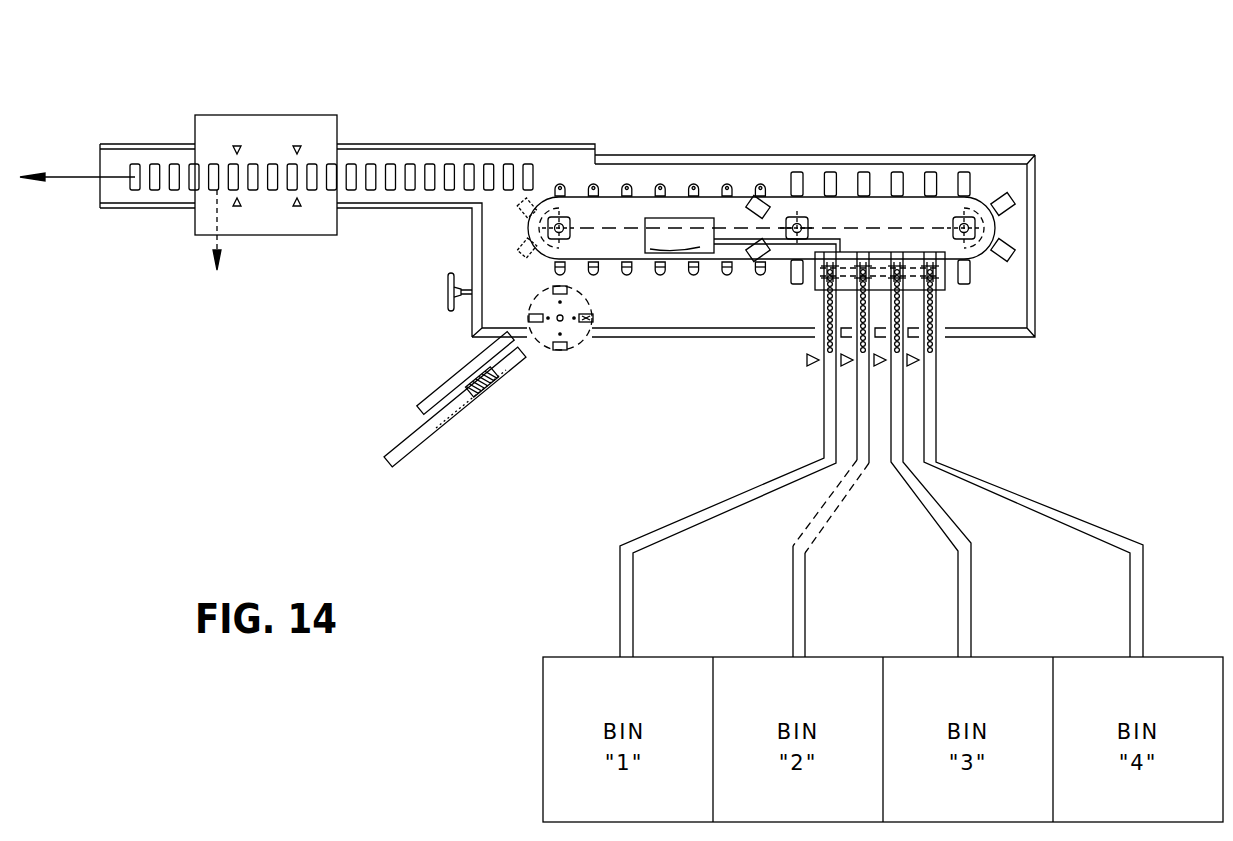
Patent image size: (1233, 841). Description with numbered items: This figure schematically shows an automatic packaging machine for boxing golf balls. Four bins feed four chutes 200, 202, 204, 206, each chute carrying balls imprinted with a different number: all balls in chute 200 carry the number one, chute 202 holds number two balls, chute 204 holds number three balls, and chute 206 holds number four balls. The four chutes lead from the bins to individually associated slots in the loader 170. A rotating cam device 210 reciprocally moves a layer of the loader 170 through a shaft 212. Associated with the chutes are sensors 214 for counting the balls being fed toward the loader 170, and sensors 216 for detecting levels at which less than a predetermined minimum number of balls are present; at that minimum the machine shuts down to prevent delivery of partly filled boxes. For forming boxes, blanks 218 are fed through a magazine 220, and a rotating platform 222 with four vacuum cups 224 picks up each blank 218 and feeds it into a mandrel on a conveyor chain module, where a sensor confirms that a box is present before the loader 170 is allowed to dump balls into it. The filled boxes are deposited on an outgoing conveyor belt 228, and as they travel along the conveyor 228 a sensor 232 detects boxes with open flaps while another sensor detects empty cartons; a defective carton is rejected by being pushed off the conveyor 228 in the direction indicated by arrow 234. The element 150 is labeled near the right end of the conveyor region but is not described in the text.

The belt guide 150 is at (1013, 238).
The loader 170 is at (868, 252).
The chute 200 is at (788, 472).
The chute 202 is at (807, 528).
The chute 204 is at (943, 530).
The chute 206 is at (982, 473).
The rotating cam device 210 is at (679, 235).
The shaft 212 is at (737, 248).
The sensors 214 is at (806, 366).
The sensors 216 is at (800, 315).
The blanks 218 is at (486, 391).
The magazine 220 is at (438, 433).
The rotating platform 222 is at (578, 348).
The vacuum cups 224 is at (604, 316).
The outgoing conveyor belt 228 is at (549, 156).
The sensor 232 is at (298, 142).
The arrow 234 is at (228, 246).